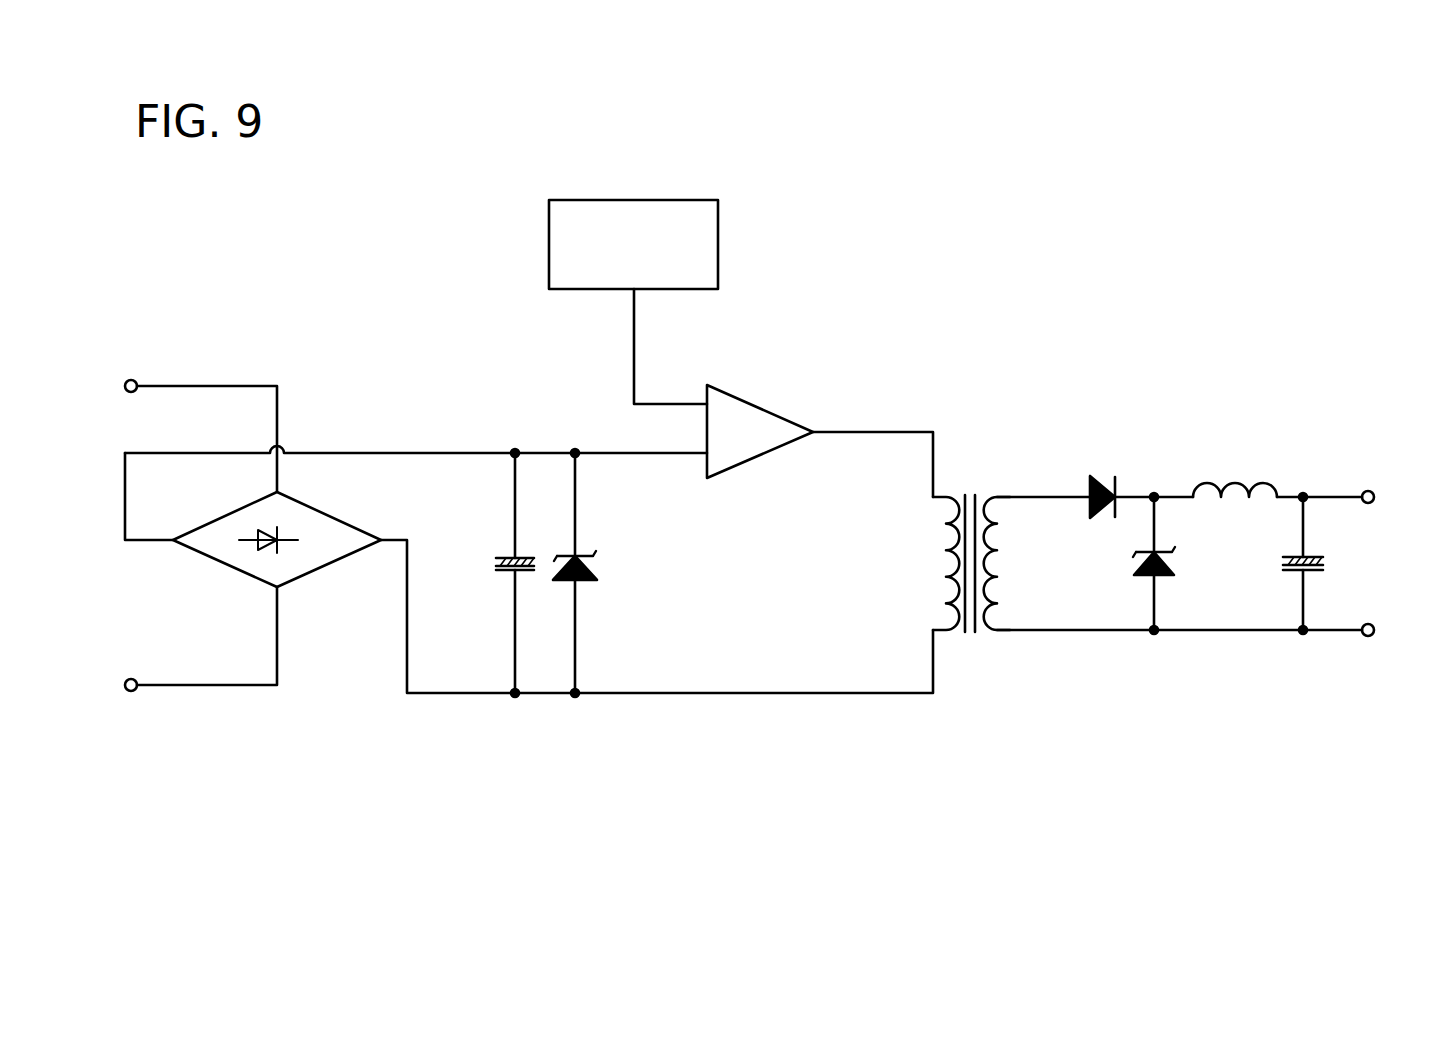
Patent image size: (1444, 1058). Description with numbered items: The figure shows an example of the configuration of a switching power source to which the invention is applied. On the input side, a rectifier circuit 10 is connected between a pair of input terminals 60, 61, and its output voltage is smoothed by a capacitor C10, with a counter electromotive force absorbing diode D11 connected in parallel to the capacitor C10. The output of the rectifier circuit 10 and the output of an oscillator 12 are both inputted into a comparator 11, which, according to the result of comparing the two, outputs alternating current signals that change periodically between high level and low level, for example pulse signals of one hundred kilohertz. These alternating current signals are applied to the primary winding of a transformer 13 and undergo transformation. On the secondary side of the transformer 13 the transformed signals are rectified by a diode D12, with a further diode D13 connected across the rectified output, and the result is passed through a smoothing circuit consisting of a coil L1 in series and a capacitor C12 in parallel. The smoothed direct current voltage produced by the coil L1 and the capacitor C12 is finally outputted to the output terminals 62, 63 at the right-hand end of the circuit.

The rectifier circuit 10 is at (338, 519).
The comparator 11 is at (765, 402).
The oscillator 12 is at (665, 198).
The transformer 13 is at (970, 492).
The input terminal 60 is at (134, 380).
The input terminal 61 is at (135, 691).
The output terminal 62 is at (1372, 490).
The output terminal 63 is at (1372, 637).
The capacitor C10 is at (492, 564).
The capacitor C12 is at (1330, 562).
The counter electromotive force absorbing diode D11 is at (590, 556).
The diode D12 is at (1103, 478).
The diode D13 is at (1135, 566).
The coil L1 is at (1245, 476).